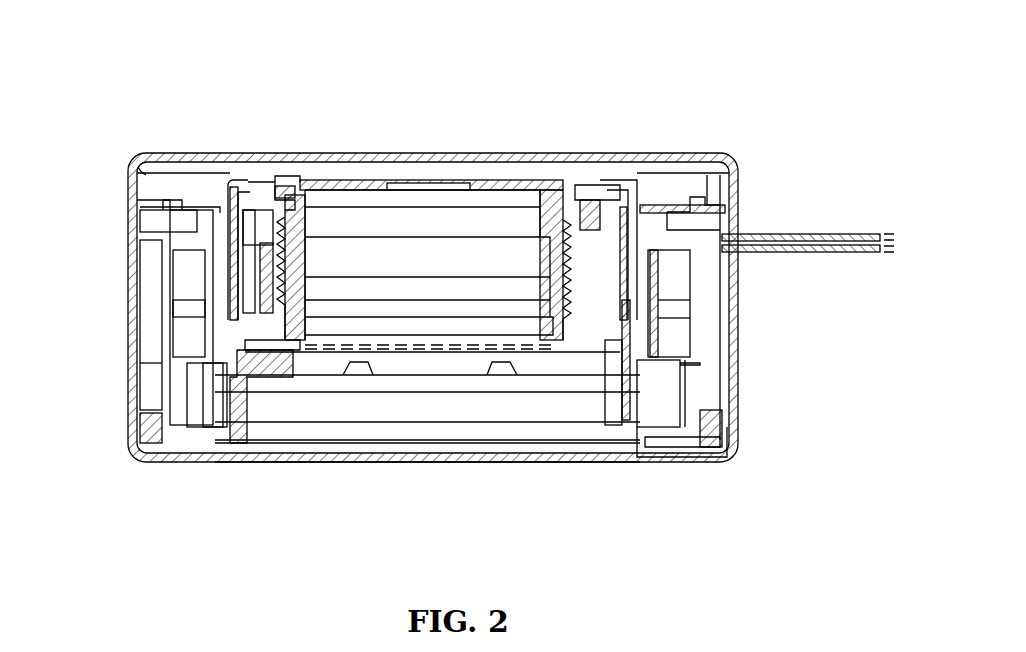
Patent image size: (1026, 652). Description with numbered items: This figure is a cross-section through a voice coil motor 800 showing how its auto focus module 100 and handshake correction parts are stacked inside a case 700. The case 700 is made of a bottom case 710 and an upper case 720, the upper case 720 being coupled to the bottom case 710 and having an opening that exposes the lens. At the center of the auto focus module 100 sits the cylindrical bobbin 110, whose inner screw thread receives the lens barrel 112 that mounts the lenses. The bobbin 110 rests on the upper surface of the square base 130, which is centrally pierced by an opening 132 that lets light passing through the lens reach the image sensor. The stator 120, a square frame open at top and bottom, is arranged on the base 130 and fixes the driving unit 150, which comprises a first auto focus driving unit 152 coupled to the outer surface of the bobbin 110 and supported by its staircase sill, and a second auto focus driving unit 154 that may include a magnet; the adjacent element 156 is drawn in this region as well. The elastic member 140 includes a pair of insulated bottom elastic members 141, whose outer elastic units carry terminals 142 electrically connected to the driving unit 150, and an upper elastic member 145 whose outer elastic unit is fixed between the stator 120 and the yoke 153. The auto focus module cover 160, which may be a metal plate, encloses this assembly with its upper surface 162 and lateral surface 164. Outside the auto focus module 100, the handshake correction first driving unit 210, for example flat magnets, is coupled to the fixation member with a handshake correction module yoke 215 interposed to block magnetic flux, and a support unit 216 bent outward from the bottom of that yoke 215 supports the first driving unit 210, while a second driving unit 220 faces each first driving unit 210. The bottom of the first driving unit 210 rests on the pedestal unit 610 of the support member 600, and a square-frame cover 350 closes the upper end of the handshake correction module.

The voice coil motor 800 is at (487, 96).
The auto focus module 100 is at (420, 205).
The bobbin 110 is at (283, 176).
The lens barrel 112 is at (510, 184).
The stator 120 is at (255, 178).
The base 130 is at (292, 380).
The opening 132 is at (433, 360).
The elastic member 140 is at (257, 362).
The bottom elastic member 141 is at (245, 378).
The terminals 142 is at (625, 422).
The upper elastic member 145 is at (138, 172).
The driving unit 150 is at (62, 290).
The first auto focus driving unit 152 is at (215, 325).
The second auto focus driving unit 154 is at (258, 300).
The yoke 156 is at (250, 275).
The yoke 153 is at (640, 205).
The auto focus module cover 160 is at (226, 179).
The upper surface 162 is at (238, 182).
The lateral surface 164 is at (150, 203).
The first driving unit 210 is at (683, 325).
The handshake correction module yoke 215 is at (670, 275).
The support unit 216 is at (680, 365).
The second driving unit 220 is at (733, 350).
The cover 350 is at (726, 222).
The support member 600 is at (661, 443).
The pedestal unit 610 is at (693, 432).
The case 700 is at (36, 200).
The bottom case 710 is at (150, 262).
The upper case 720 is at (165, 218).